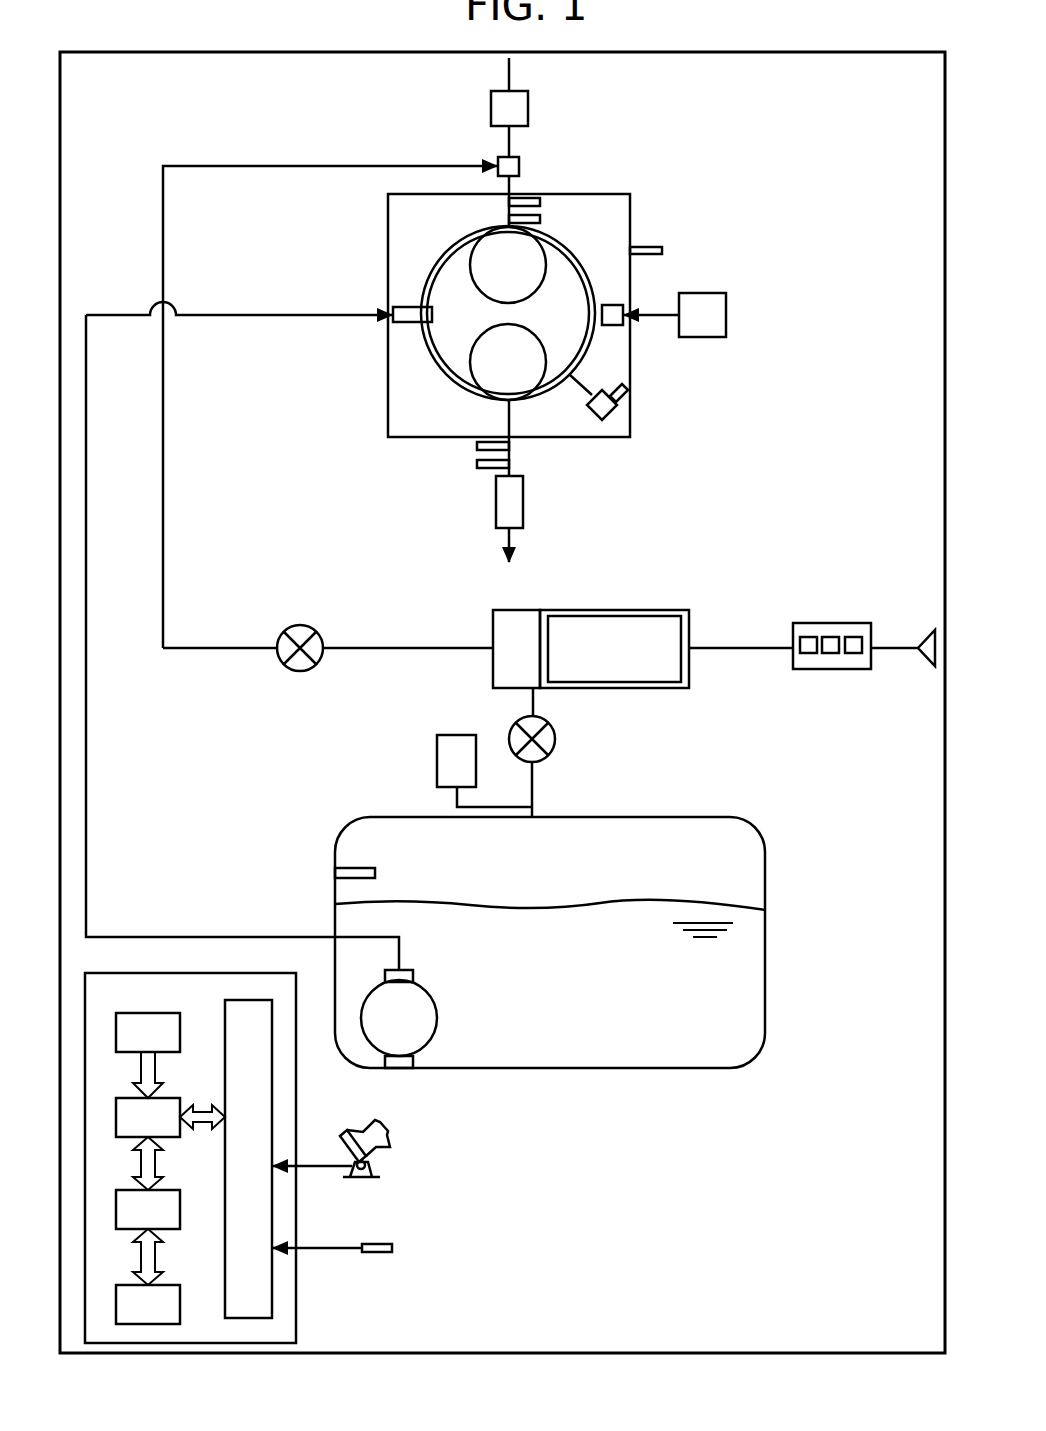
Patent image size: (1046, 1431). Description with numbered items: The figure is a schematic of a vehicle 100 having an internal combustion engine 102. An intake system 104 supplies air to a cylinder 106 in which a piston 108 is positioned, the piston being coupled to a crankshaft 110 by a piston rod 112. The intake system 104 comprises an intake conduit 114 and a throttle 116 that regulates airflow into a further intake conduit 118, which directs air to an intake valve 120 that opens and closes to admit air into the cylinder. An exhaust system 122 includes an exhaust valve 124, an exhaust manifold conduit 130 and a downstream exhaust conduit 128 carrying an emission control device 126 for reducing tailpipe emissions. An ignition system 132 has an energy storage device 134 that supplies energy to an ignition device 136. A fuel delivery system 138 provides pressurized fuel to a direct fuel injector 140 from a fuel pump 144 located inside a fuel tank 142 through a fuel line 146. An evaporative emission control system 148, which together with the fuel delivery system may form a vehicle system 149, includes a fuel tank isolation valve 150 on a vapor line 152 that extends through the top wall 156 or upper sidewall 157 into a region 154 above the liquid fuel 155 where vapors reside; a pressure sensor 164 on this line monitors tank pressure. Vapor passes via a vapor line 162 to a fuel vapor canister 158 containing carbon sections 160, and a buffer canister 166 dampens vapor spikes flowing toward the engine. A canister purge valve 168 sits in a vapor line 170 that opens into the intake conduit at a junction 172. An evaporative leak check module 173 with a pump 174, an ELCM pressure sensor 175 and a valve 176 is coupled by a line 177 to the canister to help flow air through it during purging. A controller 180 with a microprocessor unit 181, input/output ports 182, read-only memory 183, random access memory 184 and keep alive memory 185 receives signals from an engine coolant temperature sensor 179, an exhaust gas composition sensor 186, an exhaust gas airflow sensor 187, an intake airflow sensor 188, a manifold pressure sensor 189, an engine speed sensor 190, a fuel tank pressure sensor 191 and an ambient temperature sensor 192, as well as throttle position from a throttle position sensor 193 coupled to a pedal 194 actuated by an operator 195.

The vehicle 100 is at (897, 60).
The internal combustion engine 102 is at (631, 226).
The intake system 104 is at (612, 138).
The cylinder 106 is at (450, 250).
The piston 108 is at (463, 239).
The crankshaft 110 is at (588, 410).
The piston rod 112 is at (584, 384).
The intake conduit 114 is at (512, 72).
The throttle 116 is at (491, 120).
The intake conduit 118 is at (512, 137).
The intake valve 120 is at (544, 265).
The exhaust system 122 is at (583, 474).
The exhaust valve 124 is at (546, 355).
The emission control device 126 is at (496, 513).
The exhaust conduit 128 is at (513, 537).
The exhaust conduit 130 is at (507, 418).
The ignition system 132 is at (746, 313).
The energy storage device 134 is at (685, 337).
The ignition device 136 is at (608, 304).
The fuel delivery system 138 is at (284, 890).
The fuel injector 140 is at (408, 306).
The fuel tank 142 is at (808, 870).
The fuel pump 144 is at (437, 1022).
The fuel line 146 is at (252, 938).
The evaporative emission control system 148 is at (836, 572).
The vehicle system 149 is at (888, 495).
The fuel tank isolation valve 150 is at (555, 739).
The vapor line 152 is at (535, 780).
The region 154 is at (550, 879).
The liquid fuel 155 is at (643, 957).
The top wall 156 is at (610, 818).
The sidewall 157 is at (765, 856).
The fuel vapor canister 158 is at (574, 618).
The carbon sections 160 is at (585, 682).
The vapor line 162 is at (532, 704).
The pressure sensor 164 is at (437, 766).
The buffer canister 166 is at (500, 618).
The canister purge valve 168 is at (302, 632).
The vapor line 170 is at (276, 167).
The junction 172 is at (520, 166).
The evaporative leak check module 173 is at (800, 624).
The pump 174 is at (806, 653).
The ELCM pressure sensor 175 is at (830, 653).
The valve 176 is at (853, 653).
The line 177 is at (712, 648).
The engine coolant temperature sensor 179 is at (650, 254).
The controller 180 is at (90, 975).
The microprocessor unit 181 is at (164, 1098).
The input/output ports 182 is at (225, 1032).
The read-only memory 183 is at (117, 1013).
The random access memory 184 is at (164, 1190).
The keep alive memory 185 is at (164, 1285).
The exhaust gas composition sensor 186 is at (477, 446).
The exhaust gas airflow sensor 187 is at (477, 464).
The intake airflow sensor 188 is at (540, 202).
The manifold pressure sensor 189 is at (540, 219).
The engine speed sensor 190 is at (625, 386).
The fuel tank pressure sensor 191 is at (356, 868).
The ambient temperature sensor 192 is at (384, 1244).
The throttle position sensor 193 is at (374, 1172).
The pedal 194 is at (346, 1147).
The operator 195 is at (385, 1131).